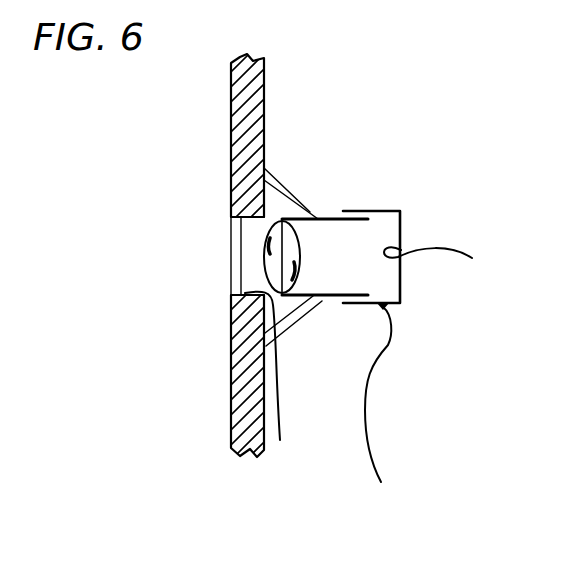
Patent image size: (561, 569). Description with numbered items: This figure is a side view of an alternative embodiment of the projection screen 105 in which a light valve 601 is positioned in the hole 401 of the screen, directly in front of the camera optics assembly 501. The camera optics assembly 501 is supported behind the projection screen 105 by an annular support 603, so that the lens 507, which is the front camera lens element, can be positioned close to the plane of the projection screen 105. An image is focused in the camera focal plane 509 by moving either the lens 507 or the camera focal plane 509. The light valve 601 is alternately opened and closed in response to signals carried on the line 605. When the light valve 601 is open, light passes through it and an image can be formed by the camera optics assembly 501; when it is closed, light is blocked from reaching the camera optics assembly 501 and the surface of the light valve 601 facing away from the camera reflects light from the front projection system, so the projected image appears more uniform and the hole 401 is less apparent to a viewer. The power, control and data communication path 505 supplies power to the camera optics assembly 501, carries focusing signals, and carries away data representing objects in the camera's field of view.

The projection screen 105 is at (266, 72).
The hole 401 is at (246, 284).
The camera optics assembly 501 is at (400, 211).
The power, control and data communication path 505 is at (364, 413).
The lens 507 is at (299, 262).
The camera focal plane 509 is at (447, 266).
The light valve 601 is at (232, 240).
The annular support 603 is at (303, 191).
The line 605 is at (280, 441).